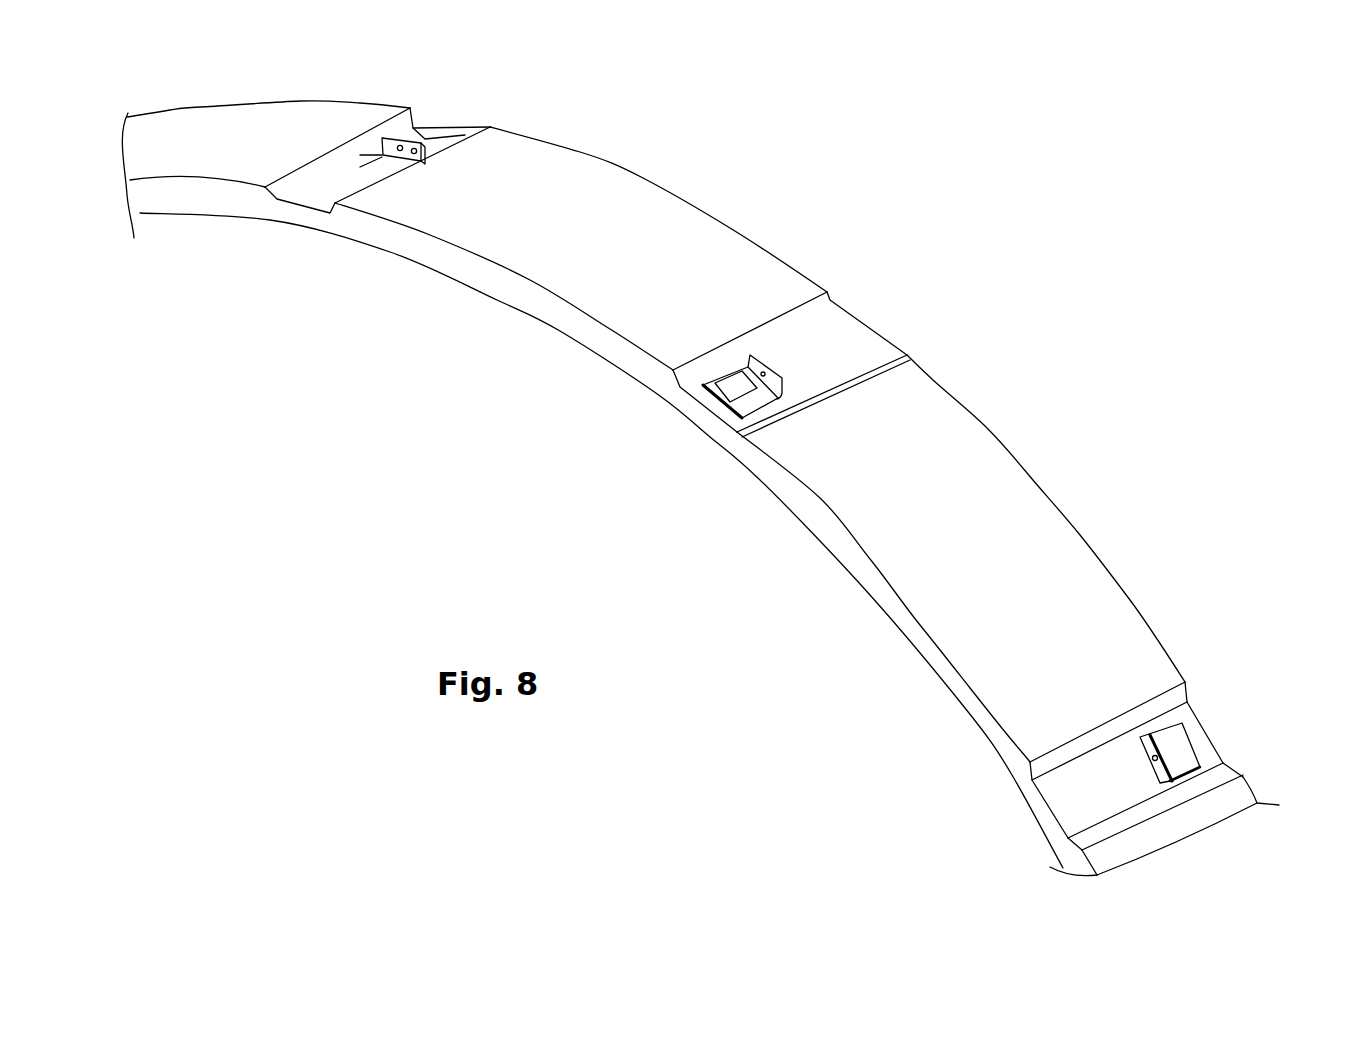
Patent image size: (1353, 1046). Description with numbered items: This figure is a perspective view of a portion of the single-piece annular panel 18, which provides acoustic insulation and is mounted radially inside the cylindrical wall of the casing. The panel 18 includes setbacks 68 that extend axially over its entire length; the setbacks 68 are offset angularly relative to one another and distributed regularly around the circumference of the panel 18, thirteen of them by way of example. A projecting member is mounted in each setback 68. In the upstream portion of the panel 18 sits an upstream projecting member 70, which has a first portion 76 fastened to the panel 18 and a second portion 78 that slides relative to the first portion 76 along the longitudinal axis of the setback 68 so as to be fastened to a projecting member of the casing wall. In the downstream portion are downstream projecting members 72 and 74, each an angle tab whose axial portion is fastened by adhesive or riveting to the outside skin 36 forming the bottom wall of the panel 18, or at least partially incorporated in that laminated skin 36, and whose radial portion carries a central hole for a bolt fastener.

The annular panel 18 is at (724, 170).
The setback 68 is at (479, 107).
The outside skin 36 is at (320, 196).
The downstream projecting member 74 is at (420, 118).
The upstream projecting member 70 is at (688, 405).
The first portion 76 is at (741, 410).
The second portion 78 is at (776, 380).
The downstream projecting member 72 is at (1212, 736).